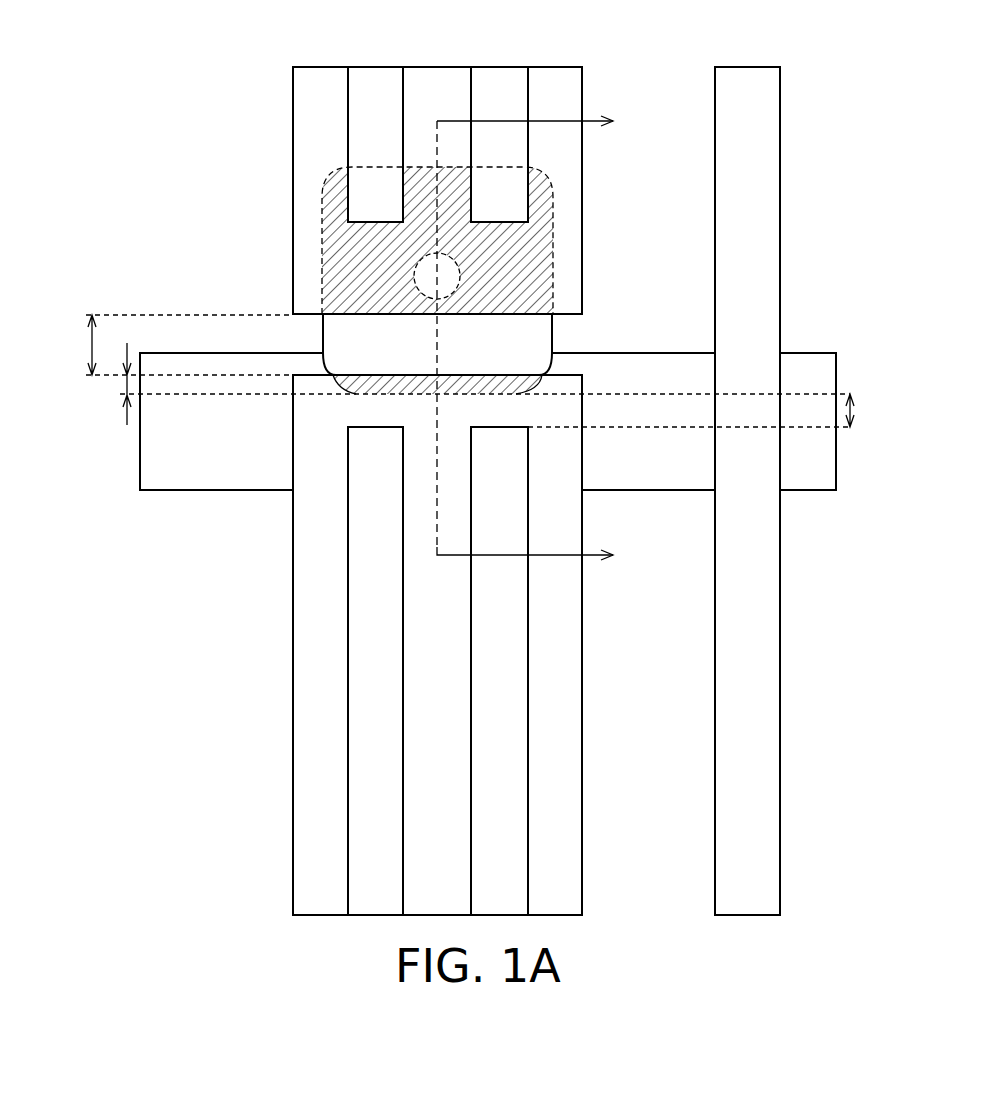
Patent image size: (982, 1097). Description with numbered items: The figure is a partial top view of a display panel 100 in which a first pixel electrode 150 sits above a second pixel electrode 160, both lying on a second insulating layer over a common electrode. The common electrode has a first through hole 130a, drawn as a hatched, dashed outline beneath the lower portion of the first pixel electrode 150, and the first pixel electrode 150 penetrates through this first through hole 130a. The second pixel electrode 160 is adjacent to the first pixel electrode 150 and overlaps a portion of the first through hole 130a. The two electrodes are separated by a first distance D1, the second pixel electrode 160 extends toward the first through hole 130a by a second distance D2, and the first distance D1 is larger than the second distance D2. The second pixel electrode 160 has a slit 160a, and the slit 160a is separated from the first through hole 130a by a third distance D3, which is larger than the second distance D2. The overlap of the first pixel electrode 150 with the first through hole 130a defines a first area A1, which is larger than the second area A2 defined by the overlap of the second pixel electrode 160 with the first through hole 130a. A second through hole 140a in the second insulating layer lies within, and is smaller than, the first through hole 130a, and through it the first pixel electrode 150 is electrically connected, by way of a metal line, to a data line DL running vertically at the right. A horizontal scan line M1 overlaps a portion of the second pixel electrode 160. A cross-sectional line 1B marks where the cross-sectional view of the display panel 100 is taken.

The display panel 100 is at (82, 47).
The first pixel electrode 150 is at (556, 93).
The second pixel electrode 160 is at (557, 830).
The slit 160a is at (373, 697).
The data line DL is at (781, 830).
The scan line M1 is at (180, 490).
The first through hole 130a is at (554, 332).
The second through hole 140a is at (456, 268).
The first area A1 is at (320, 258).
The second area A2 is at (333, 384).
The cross-sectional line 1B is at (544, 339).
The first distance D1 is at (175, 345).
The second distance D2 is at (471, 386).
The third distance D3 is at (708, 410).